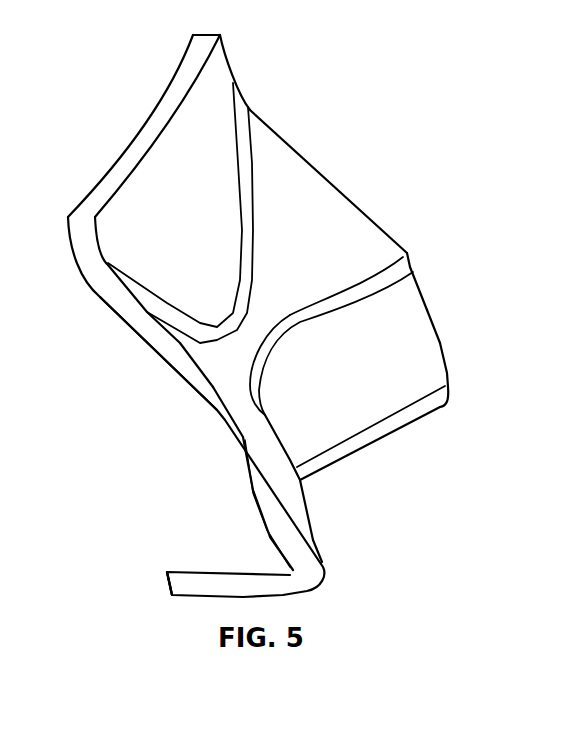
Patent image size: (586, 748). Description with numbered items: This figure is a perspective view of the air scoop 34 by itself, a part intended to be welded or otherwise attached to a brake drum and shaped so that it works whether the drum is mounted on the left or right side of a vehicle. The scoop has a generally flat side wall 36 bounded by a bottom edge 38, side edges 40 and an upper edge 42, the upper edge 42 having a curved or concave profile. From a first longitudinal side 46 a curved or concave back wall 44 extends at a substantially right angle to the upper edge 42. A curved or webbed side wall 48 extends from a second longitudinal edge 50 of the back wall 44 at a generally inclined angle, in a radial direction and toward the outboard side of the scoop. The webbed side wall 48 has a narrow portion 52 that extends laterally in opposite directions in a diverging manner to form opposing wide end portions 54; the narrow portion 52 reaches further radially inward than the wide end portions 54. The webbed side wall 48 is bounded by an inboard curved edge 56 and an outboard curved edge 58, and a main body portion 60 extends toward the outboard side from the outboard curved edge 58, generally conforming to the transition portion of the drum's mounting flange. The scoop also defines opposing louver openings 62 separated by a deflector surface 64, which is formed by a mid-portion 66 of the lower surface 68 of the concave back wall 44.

The air scoop 34 is at (366, 52).
The side wall 36 is at (228, 545).
The bottom edge 38 is at (178, 560).
The side edges 40 is at (444, 341).
The upper edge 42 is at (440, 408).
The back wall 44 is at (327, 390).
The first longitudinal side 46 is at (433, 375).
The webbed side wall 48 is at (288, 165).
The second longitudinal edge 50 is at (413, 293).
The narrow portion 52 is at (250, 335).
The wide end portions 54 is at (367, 227).
The inboard curved edge 56 is at (407, 253).
The outboard curved edge 58 is at (257, 110).
The main body portion 60 is at (230, 73).
The louver openings 62 is at (453, 219).
The deflector surface 64 is at (247, 455).
The mid-portion 66 is at (204, 412).
The lower surface 68 is at (257, 487).